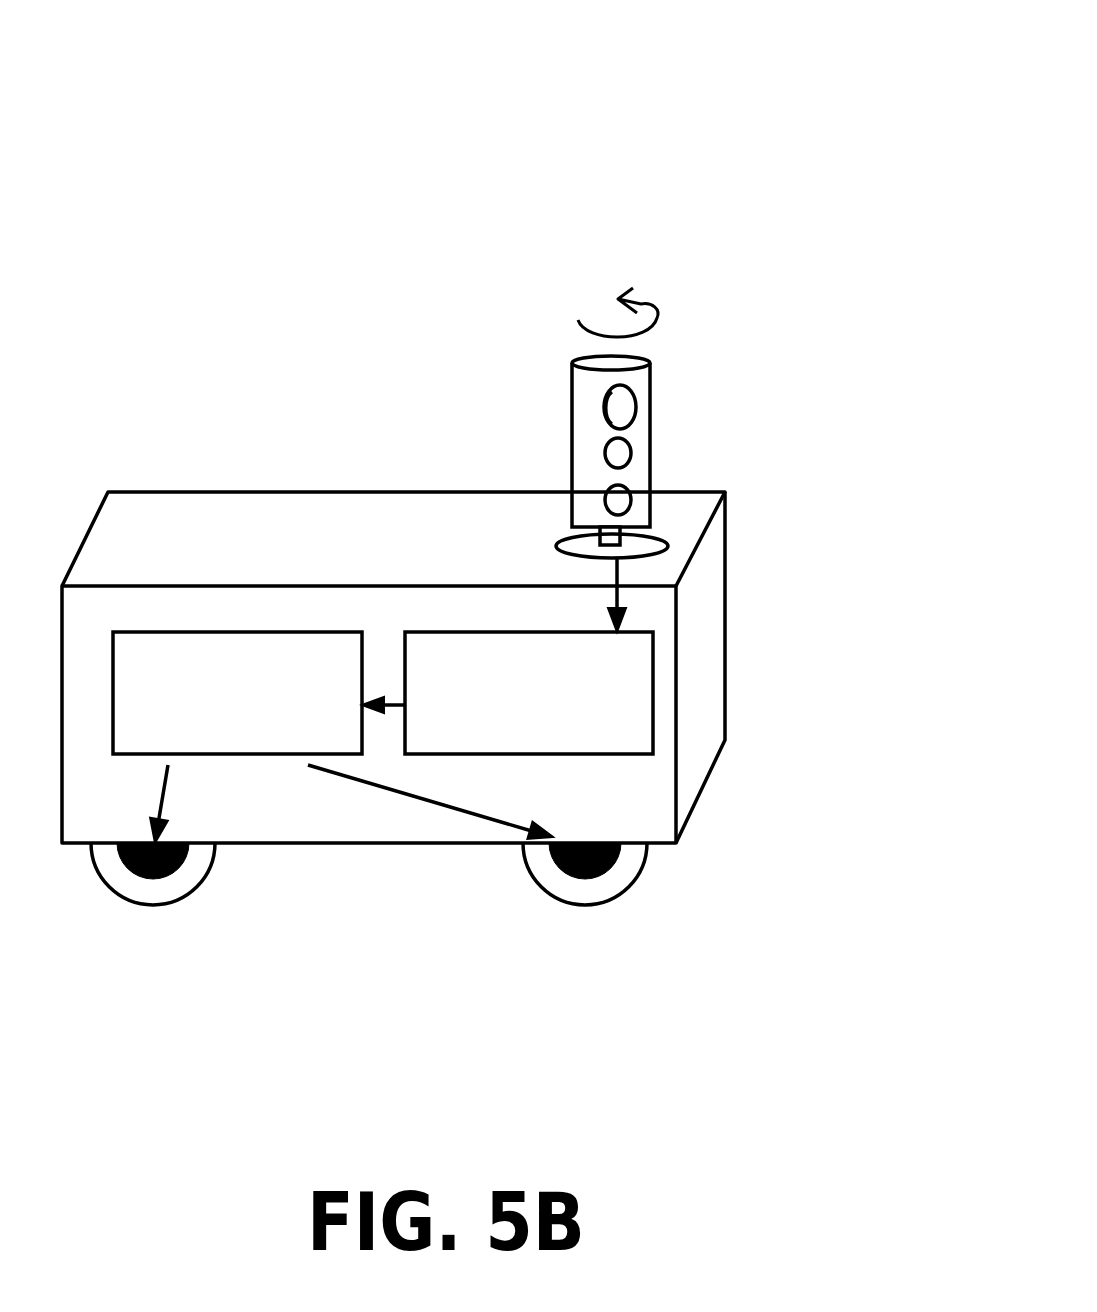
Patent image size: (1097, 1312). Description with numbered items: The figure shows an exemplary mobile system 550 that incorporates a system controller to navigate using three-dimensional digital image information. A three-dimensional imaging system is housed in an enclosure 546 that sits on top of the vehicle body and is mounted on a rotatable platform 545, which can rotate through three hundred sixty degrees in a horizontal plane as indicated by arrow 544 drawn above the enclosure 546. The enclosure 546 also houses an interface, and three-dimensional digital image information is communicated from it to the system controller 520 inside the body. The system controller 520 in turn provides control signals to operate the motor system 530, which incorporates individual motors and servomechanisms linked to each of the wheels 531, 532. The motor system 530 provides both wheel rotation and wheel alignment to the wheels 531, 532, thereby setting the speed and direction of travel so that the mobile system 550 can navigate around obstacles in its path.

The mobile system 550 is at (852, 156).
The arrow 544 is at (663, 308).
The enclosure 546 is at (570, 442).
The rotatable platform 545 is at (558, 542).
The system controller 520 is at (640, 681).
The motor system 530 is at (352, 681).
The wheel 531 is at (167, 905).
The wheel 532 is at (585, 905).